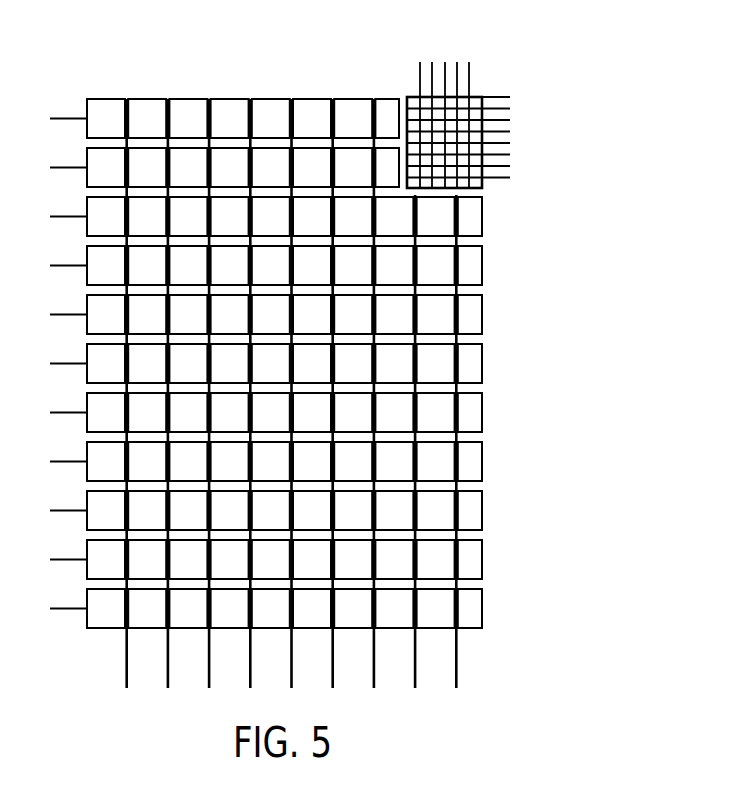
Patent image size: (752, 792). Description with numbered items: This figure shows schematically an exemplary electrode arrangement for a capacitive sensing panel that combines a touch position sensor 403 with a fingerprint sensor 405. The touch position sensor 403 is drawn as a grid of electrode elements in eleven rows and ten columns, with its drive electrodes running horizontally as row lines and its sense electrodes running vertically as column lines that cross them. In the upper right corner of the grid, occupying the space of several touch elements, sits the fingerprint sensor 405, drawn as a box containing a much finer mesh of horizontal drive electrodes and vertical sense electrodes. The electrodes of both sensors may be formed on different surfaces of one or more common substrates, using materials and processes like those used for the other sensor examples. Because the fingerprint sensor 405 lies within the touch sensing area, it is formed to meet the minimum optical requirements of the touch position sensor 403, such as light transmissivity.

The touch position sensor 403 is at (502, 453).
The fingerprint sensor 405 is at (498, 102).